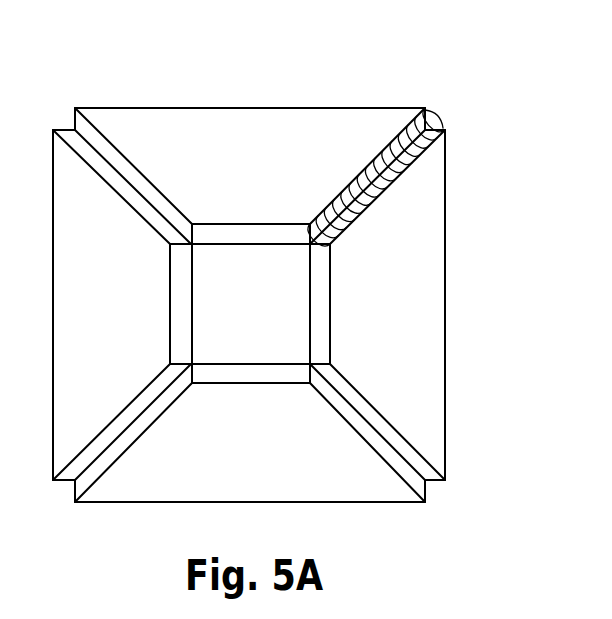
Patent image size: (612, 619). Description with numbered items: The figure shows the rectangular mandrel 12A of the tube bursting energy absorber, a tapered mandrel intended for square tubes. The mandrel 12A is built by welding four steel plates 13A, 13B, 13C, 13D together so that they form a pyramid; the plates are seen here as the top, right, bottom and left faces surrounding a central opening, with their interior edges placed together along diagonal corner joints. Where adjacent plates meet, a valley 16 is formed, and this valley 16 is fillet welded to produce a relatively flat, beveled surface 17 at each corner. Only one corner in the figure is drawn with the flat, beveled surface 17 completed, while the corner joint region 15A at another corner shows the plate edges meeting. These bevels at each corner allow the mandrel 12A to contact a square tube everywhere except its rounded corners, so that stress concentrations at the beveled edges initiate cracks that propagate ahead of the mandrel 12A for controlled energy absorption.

The mandrel 12A is at (303, 91).
The steel plate 13A is at (267, 158).
The steel plate 13B is at (367, 291).
The steel plate 13C is at (233, 432).
The steel plate 13D is at (93, 293).
The corner joint 15A is at (97, 138).
The valley 16 is at (131, 187).
The flat, beveled surface 17 is at (434, 119).